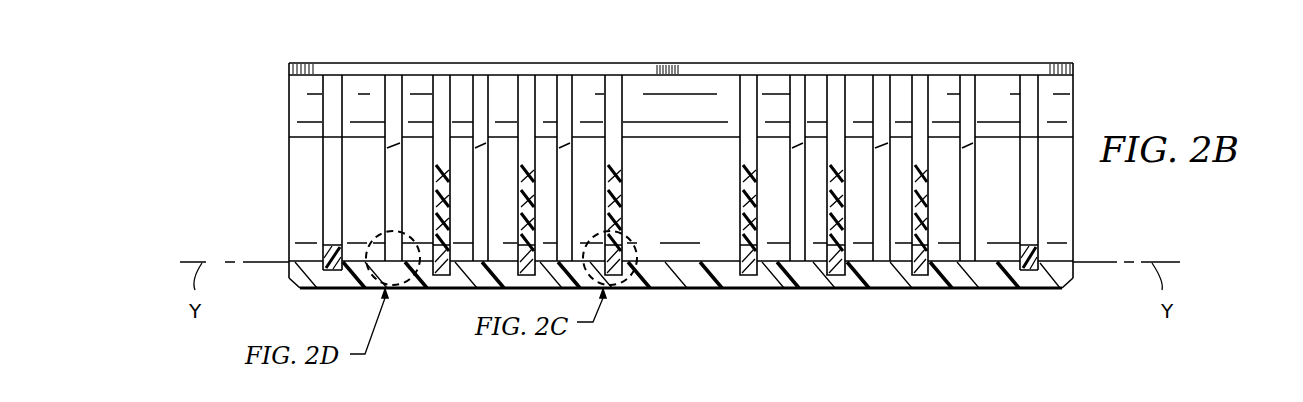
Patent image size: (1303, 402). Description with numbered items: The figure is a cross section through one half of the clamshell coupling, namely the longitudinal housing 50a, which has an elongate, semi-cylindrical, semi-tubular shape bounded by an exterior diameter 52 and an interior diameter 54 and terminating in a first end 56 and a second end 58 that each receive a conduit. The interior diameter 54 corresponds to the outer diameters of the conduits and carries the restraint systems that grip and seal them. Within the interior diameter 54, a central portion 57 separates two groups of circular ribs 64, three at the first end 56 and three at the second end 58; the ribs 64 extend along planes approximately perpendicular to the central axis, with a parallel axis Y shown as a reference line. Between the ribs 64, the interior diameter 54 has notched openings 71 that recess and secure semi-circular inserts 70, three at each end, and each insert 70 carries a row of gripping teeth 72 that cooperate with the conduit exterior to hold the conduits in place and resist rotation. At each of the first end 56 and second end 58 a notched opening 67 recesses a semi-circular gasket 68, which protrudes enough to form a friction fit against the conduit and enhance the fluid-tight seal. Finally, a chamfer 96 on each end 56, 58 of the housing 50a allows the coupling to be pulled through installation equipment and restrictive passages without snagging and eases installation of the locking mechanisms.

The longitudinal housing 50a is at (821, 289).
The exterior diameter 52 is at (745, 289).
The interior diameter 54 is at (668, 47).
The first end 56 is at (289, 106).
The central portion 57 is at (666, 180).
The second end 58 is at (1073, 107).
The circular ribs 64 is at (380, 106).
The notched opening 67 is at (336, 275).
The semi-circular gasket 68 is at (338, 246).
The semi-circular inserts 70 is at (668, 148).
The notched openings 71 is at (443, 288).
The gripping teeth 72 is at (742, 246).
The chamfer 96 is at (298, 287).